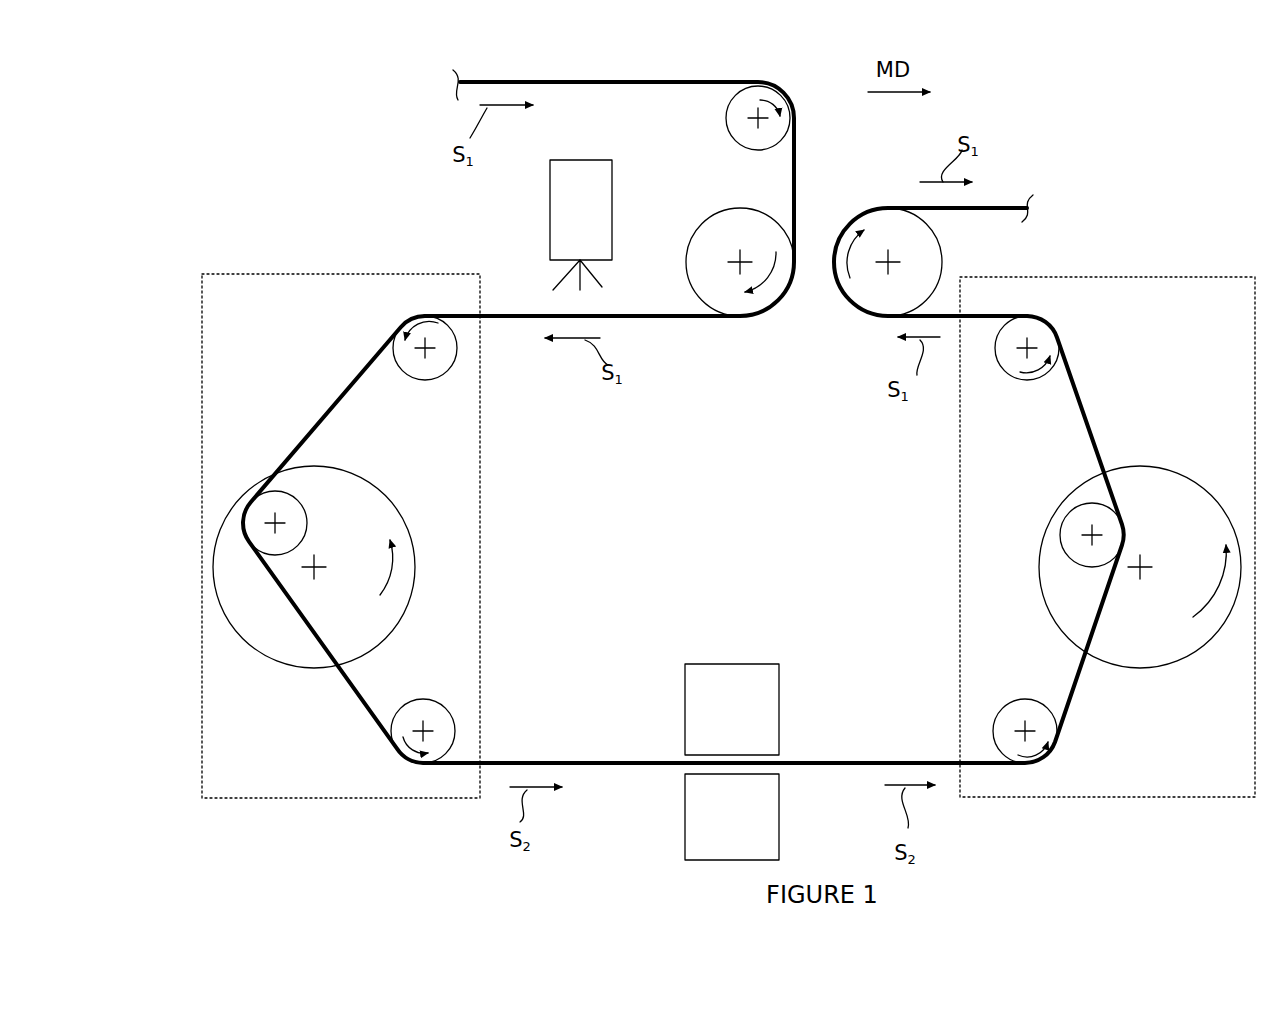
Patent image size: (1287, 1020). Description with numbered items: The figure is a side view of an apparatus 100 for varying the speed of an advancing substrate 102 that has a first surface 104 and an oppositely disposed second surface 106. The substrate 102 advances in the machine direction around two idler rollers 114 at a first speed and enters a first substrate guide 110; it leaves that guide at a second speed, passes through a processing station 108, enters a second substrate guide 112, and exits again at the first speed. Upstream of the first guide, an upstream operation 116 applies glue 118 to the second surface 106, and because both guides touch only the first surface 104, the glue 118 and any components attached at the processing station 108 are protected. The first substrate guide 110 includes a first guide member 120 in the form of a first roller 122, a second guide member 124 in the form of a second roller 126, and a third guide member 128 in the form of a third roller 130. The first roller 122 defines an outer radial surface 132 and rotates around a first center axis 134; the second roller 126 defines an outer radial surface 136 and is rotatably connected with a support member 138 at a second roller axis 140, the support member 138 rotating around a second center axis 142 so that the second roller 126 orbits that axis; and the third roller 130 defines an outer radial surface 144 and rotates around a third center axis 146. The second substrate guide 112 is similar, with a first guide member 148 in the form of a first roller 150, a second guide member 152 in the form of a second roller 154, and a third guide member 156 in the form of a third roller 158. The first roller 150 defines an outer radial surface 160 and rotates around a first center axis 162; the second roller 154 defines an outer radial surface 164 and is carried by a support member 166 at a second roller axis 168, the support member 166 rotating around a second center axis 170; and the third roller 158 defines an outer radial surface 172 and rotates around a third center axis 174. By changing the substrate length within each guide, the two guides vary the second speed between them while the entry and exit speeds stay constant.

The apparatus 100 is at (1112, 195).
The substrate 102 is at (493, 80).
The first surface 104 is at (560, 80).
The second surface 106 is at (625, 85).
The processing station 108 is at (735, 682).
The first substrate guide 110 is at (305, 300).
The second substrate guide 112 is at (1158, 305).
The idler rollers 114 is at (715, 222).
The upstream operation 116 is at (575, 210).
The glue 118 is at (555, 287).
The first guide member 120 is at (442, 363).
The first roller 122 is at (430, 370).
The second guide member 124 is at (303, 522).
The second roller 126 is at (297, 512).
The third guide member 128 is at (447, 723).
The third roller 130 is at (423, 707).
The outer radial surface 132 is at (453, 357).
The first center axis 134 is at (437, 338).
The outer radial surface 136 is at (300, 542).
The support member 138 is at (417, 590).
The second roller axis 140 is at (278, 520).
The second center axis 142 is at (320, 567).
The outer radial surface 144 is at (457, 737).
The third center axis 146 is at (433, 723).
The first guide member 148 is at (1007, 723).
The first roller 150 is at (1007, 713).
The second guide member 152 is at (1073, 548).
The second roller 154 is at (1067, 535).
The third guide member 156 is at (1030, 373).
The third roller 158 is at (997, 350).
The outer radial surface 160 is at (1020, 697).
The first center axis 162 is at (1000, 743).
The outer radial surface 164 is at (1087, 500).
The support member 166 is at (1128, 665).
The second roller axis 168 is at (1087, 527).
The second center axis 170 is at (1145, 563).
The outer radial surface 172 is at (1037, 378).
The third center axis 174 is at (1017, 350).